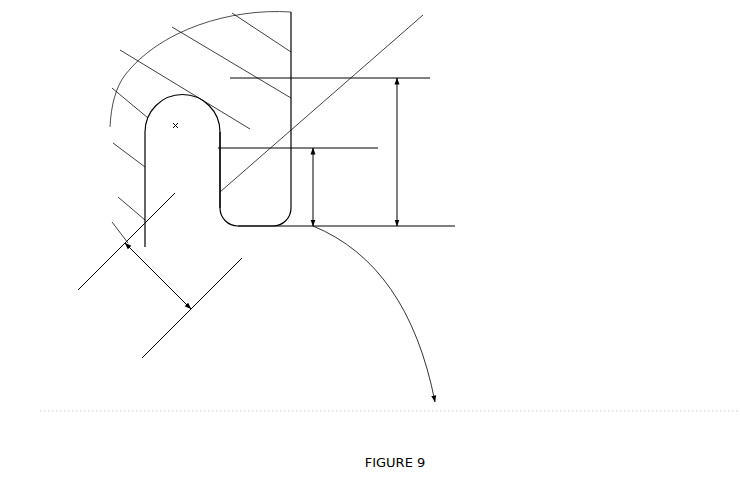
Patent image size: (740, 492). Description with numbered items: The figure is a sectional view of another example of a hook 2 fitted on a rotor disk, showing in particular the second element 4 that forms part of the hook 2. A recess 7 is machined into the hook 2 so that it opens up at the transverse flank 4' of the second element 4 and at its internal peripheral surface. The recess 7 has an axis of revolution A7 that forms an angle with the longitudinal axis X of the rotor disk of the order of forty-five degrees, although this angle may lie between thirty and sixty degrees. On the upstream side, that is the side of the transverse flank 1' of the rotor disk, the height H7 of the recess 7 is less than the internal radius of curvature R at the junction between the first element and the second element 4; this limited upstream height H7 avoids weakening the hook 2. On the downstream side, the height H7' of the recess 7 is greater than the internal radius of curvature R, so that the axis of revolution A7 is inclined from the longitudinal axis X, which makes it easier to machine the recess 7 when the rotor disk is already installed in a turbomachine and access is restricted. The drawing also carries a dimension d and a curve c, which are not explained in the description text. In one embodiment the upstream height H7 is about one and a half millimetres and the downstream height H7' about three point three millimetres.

The hook 2 is at (480, 113).
The second element 4 is at (237, 126).
The transverse flank 4' is at (134, 148).
The transverse flank of the rotor disk 1' is at (182, 171).
The recess 7 is at (257, 228).
The internal radius of curvature R is at (192, 118).
The axis of revolution A7 is at (407, 39).
The height of the recess on the upstream side H7 is at (298, 187).
The height of the recess on the downstream side H7' is at (415, 152).
The wall thickness d is at (160, 275).
The curve c is at (377, 314).
The longitudinal axis X is at (594, 410).